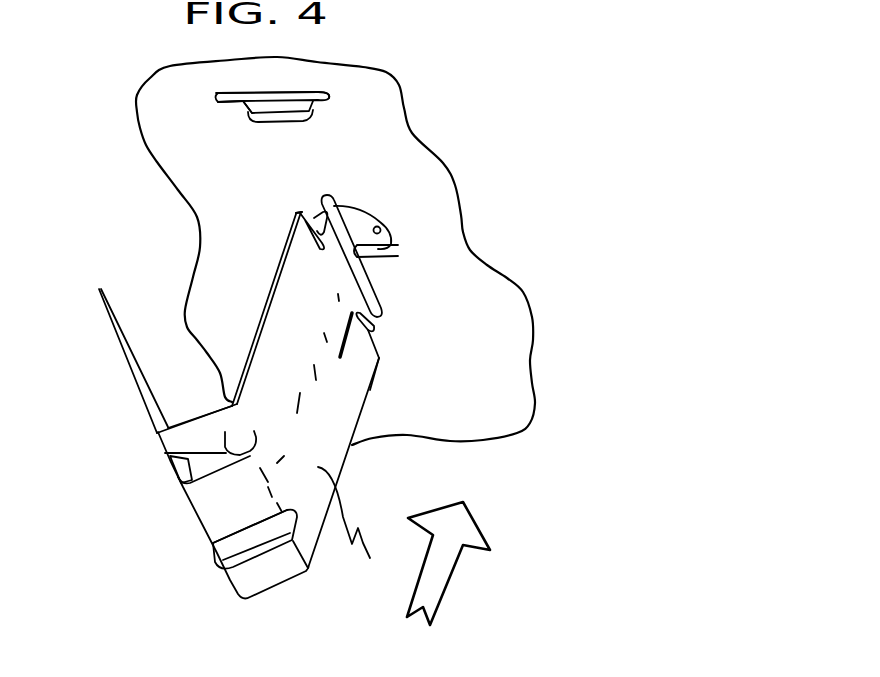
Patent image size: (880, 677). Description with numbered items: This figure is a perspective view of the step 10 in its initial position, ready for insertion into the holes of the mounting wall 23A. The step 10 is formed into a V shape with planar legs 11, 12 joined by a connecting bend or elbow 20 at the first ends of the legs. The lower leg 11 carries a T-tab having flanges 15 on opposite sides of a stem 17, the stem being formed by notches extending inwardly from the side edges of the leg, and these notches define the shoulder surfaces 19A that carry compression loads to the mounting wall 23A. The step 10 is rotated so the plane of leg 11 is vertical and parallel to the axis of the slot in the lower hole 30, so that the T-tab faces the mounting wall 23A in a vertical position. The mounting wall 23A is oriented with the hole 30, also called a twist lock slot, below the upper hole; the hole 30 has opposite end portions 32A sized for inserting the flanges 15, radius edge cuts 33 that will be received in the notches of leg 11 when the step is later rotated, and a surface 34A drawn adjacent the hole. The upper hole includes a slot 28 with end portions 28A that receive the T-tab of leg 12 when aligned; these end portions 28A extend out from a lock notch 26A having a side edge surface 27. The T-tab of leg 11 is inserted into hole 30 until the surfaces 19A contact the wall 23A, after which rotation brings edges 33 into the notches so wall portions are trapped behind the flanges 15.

The step 10 is at (162, 536).
The lower leg 11 is at (388, 550).
The leg 12 is at (135, 373).
The flanges 15 is at (322, 232).
The stem 17 is at (324, 353).
The shoulder surfaces 19A is at (295, 211).
The connecting bend or elbow 20 is at (222, 515).
The mounting wall 23A is at (467, 313).
The lock notch 26A is at (281, 108).
The side edge surface 27 is at (252, 117).
The slot 28 is at (261, 92).
The end portions 28A is at (222, 106).
The hole 30 is at (358, 231).
The end portions 32A is at (330, 196).
The radius edge cuts 33 is at (390, 228).
The locking tab 34A is at (396, 248).